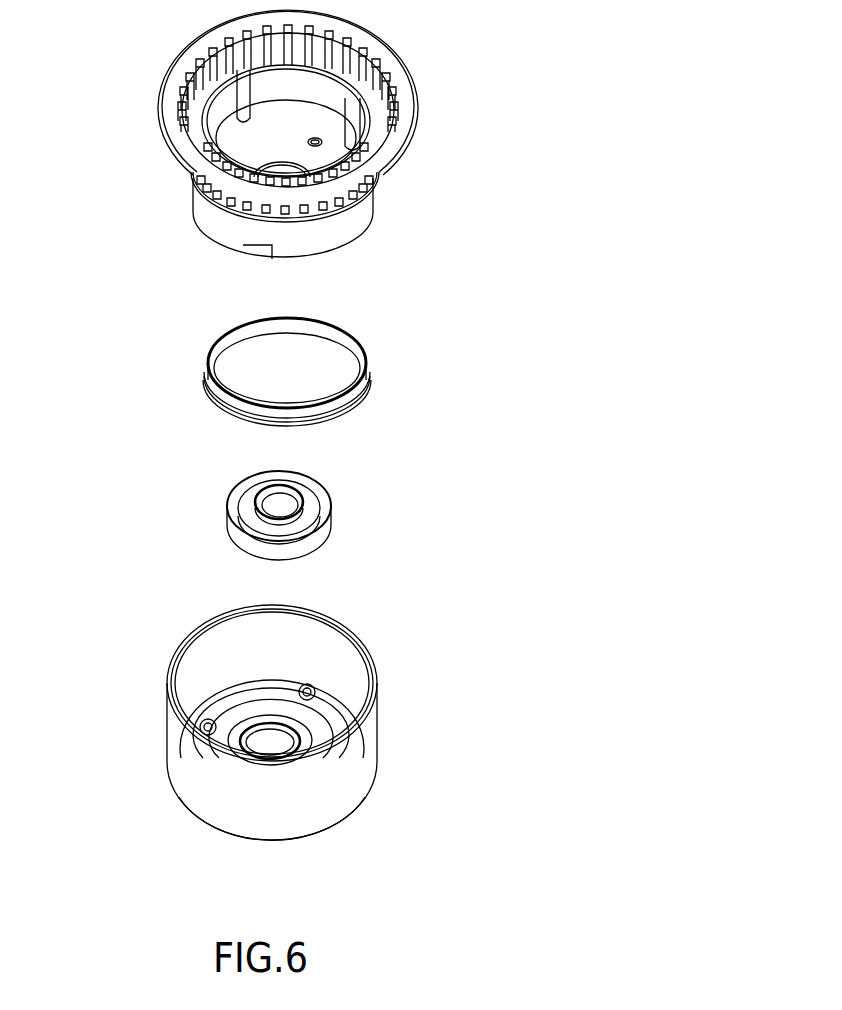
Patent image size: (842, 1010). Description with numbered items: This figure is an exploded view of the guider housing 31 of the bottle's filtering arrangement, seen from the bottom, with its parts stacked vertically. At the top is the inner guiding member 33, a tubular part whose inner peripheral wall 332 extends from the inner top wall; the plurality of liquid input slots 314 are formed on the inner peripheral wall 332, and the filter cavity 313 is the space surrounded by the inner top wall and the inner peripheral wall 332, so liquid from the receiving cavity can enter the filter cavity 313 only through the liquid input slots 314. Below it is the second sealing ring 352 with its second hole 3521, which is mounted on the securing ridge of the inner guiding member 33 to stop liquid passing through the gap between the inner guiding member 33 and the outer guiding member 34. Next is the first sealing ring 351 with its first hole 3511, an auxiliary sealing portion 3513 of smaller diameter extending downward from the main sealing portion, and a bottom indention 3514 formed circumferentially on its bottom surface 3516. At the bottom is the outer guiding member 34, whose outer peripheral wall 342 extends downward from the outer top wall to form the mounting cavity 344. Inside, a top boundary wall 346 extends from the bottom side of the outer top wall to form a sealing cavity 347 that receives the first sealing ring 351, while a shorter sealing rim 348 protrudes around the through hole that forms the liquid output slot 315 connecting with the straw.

The guider housing 31 is at (320, 689).
The inner guiding member 33 is at (297, 135).
The filter cavity 313 is at (338, 78).
The liquid input slots 314 is at (193, 65).
The inner peripheral wall 332 is at (340, 235).
The second sealing ring 352 is at (371, 371).
The second hole 3521 is at (305, 347).
The first sealing ring 351 is at (270, 491).
The first hole 3511 is at (261, 490).
The auxiliary sealing portion 3513 is at (293, 482).
The bottom indention 3514 is at (318, 515).
The bottom surface 3516 is at (236, 514).
The outer guiding member 34 is at (320, 689).
The outer peripheral wall 342 is at (184, 777).
The mounting cavity 344 is at (328, 658).
The top boundary wall 346 is at (320, 725).
The sealing cavity 347 is at (278, 705).
The sealing rim 348 is at (306, 669).
The liquid output slot 315 is at (265, 737).